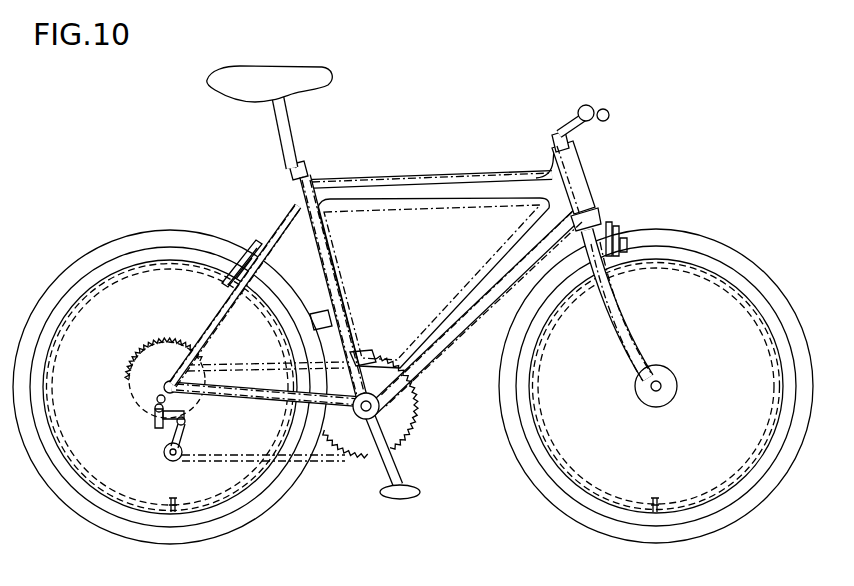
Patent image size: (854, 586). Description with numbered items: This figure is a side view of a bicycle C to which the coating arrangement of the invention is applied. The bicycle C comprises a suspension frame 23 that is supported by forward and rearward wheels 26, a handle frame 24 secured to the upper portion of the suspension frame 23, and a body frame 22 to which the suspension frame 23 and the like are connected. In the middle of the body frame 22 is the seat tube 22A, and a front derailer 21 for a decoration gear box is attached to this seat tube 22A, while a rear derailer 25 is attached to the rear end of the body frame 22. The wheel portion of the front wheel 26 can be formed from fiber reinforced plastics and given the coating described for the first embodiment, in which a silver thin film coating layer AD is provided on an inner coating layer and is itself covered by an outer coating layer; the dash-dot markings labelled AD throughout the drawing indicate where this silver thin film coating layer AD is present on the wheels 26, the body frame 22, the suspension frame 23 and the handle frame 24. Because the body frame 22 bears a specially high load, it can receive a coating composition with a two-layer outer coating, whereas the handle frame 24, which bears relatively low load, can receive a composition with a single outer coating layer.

The front derailer 21 is at (354, 352).
The body frame 22 is at (370, 187).
The seat tube 22A is at (318, 231).
The suspension frame 23 is at (622, 332).
The handle frame 24 is at (572, 127).
The rear derailer 25 is at (164, 450).
The wheel 26 is at (102, 283).
The silver thin film coating layer AD is at (432, 184).
The bicycle C is at (608, 68).